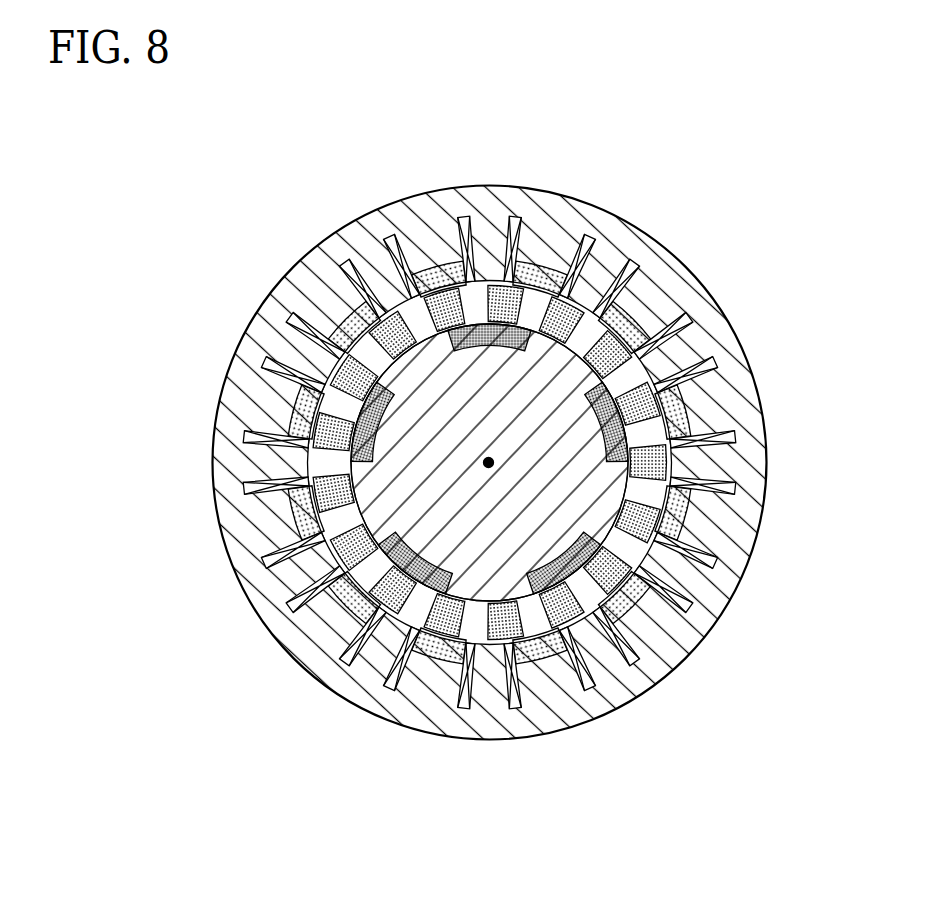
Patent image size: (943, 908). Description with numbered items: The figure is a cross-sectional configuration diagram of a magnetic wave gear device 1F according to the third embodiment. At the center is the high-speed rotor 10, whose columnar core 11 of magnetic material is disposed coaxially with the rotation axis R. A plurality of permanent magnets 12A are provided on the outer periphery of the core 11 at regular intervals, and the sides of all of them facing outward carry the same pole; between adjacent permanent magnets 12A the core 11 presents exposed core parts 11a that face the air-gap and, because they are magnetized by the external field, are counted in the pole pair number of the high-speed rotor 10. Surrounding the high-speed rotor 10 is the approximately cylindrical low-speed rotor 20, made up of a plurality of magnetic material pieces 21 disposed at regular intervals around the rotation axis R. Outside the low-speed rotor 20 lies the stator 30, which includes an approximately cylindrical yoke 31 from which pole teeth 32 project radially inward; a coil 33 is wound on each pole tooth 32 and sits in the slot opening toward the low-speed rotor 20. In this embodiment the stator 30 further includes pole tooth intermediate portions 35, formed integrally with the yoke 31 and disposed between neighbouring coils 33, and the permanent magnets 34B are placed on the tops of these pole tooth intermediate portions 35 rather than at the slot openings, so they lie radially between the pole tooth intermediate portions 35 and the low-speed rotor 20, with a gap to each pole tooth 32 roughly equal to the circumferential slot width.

The magnetic wave gear device 1F is at (190, 265).
The high-speed rotor 10 is at (348, 458).
The core 11 is at (558, 510).
The exposed core part 11a is at (570, 355).
The permanent magnet 12A is at (481, 330).
The low-speed rotor 20 is at (307, 445).
The magnetic material piece 21 is at (572, 298).
The stator 30 is at (222, 377).
The yoke 31 is at (718, 306).
The pole tooth 32 is at (494, 279).
The coil 33 is at (583, 238).
The permanent magnet 34B is at (536, 268).
The pole tooth intermediate portion 35 is at (327, 285).
The rotation axis R is at (493, 466).